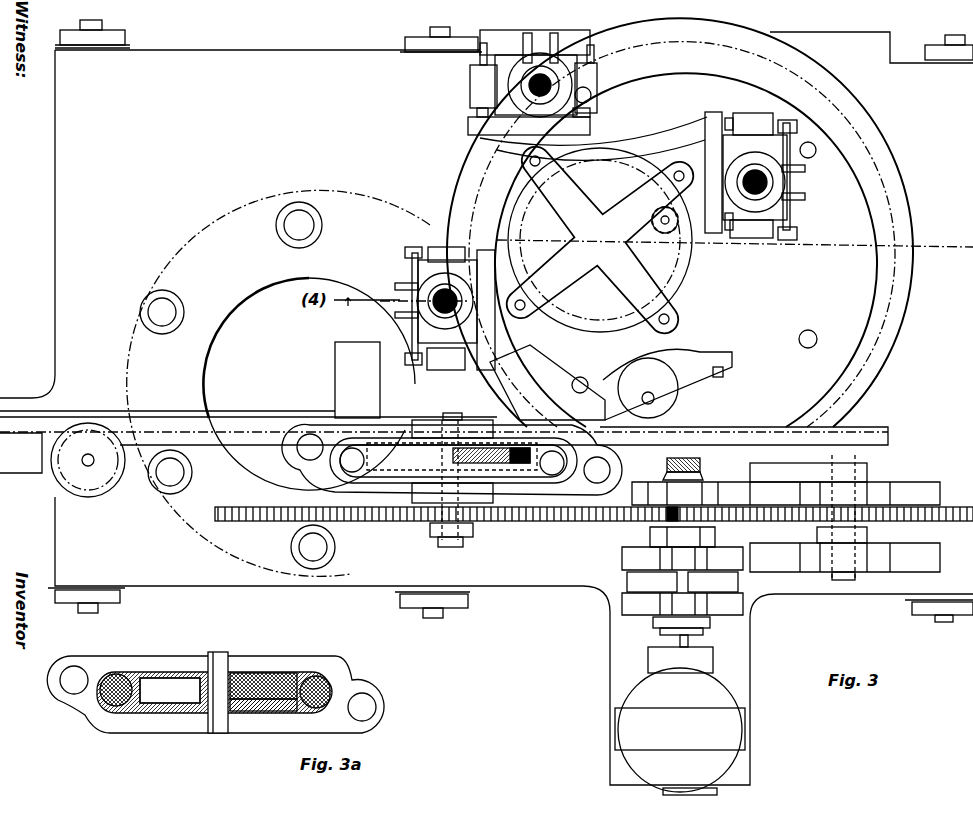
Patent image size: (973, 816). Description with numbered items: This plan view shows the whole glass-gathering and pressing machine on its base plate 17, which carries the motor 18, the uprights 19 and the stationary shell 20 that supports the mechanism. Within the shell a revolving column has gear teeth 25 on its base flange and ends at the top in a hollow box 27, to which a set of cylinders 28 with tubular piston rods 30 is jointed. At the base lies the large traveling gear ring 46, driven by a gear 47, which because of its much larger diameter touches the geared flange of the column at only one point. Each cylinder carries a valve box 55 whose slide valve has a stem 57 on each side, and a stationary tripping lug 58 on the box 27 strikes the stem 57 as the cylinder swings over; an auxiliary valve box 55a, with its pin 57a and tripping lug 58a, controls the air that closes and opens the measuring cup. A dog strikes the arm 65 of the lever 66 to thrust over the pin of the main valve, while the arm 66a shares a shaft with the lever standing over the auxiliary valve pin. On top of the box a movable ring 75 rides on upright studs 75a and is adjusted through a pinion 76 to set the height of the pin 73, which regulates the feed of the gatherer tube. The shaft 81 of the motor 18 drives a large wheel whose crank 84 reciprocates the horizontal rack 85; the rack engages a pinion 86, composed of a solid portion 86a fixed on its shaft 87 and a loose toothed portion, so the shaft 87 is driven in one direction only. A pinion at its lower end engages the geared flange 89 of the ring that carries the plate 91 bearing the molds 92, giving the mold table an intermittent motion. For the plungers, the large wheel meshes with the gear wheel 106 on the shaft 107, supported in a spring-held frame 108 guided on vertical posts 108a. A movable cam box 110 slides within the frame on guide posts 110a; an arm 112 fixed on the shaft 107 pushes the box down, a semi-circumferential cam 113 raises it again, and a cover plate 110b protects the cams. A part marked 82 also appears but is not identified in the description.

In FIG. 3, the base plate 17 is at (486, 402).
In FIG. 3, the motor 18 is at (680, 721).
In FIG. 3, the upright 19 is at (868, 538).
In FIG. 3, the stationary shell 20 is at (695, 66).
In FIG. 3, the gear teeth 25 is at (723, 283).
In FIG. 3, the hollow square box 27 is at (614, 130).
In FIG. 3, the cylinder 28 is at (500, 84).
In FIG. 3, the tubular piston rod 30 is at (532, 88).
In FIG. 3, the traveling gear ring 46 is at (902, 188).
In FIG. 3, the gear 47 is at (703, 468).
In FIG. 3, the valve box 55 is at (760, 240).
In FIG. 3, the valve box 55a is at (753, 124).
In FIG. 3, the stem 57 is at (778, 238).
In FIG. 3, the pin 57a is at (782, 122).
In FIG. 3, the tripping lug 58 is at (729, 232).
In FIG. 3, the tripping lug 58a is at (729, 118).
In FIG. 3, the arm 65 is at (806, 198).
In FIG. 3, the lever 66 is at (797, 235).
In FIG. 3, the arm 66a is at (797, 128).
In FIG. 3, the pin 73 is at (724, 372).
In FIG. 3, the movable ring 75 is at (680, 242).
In FIG. 3, the upright stud 75a is at (660, 316).
In FIG. 3, the pinion 76 is at (650, 216).
In FIG. 3, the shaft 81 is at (690, 642).
In FIG. 3, the hole 82 is at (809, 330).
In FIG. 3, the crank 84 is at (793, 444).
In FIG. 3, the horizontal rack 85 is at (716, 425).
In FIG. 3, the pinion 86 is at (100, 490).
In FIG. 3, the solid portion 86a is at (648, 388).
In FIG. 3, the shaft 87 is at (88, 453).
In FIG. 3, the geared flange 89 is at (205, 222).
In FIG. 3, the plate 91 is at (309, 370).
In FIG. 3, the mold 92 is at (315, 207).
In FIG. 3, the gear wheel 106 is at (487, 494).
In FIG. 3, the shaft 107 is at (452, 546).
In FIG. 3A, the shaft 107 is at (222, 665).
In FIG. 3, the frame 108 is at (292, 484).
In FIG. 3A, the frame 108 is at (342, 678).
In FIG. 3, the vertical post 108a is at (310, 438).
In FIG. 3A, the vertical post 108a is at (374, 704).
In FIG. 3, the movable cam box 110 is at (453, 460).
In FIG. 3A, the movable cam box 110 is at (147, 680).
In FIG. 3, the guide post 110a is at (362, 454).
In FIG. 3A, the guide post 110a is at (120, 685).
In FIG. 3A, the cover plate 110b is at (150, 712).
In FIG. 3A, the arm 112 is at (283, 710).
In FIG. 3, the semi-circumferential cam 113 is at (505, 468).
In FIG. 3A, the semi-circumferential cam 113 is at (272, 688).